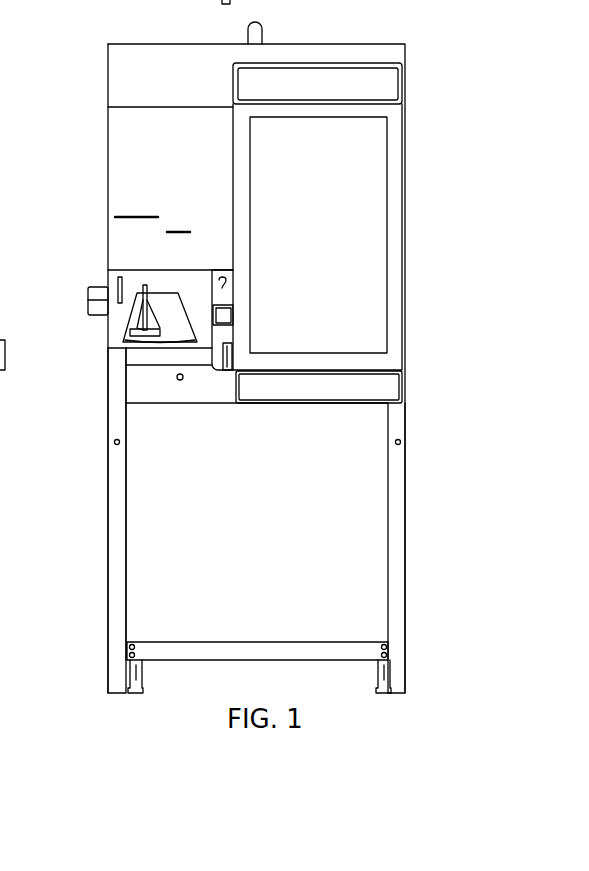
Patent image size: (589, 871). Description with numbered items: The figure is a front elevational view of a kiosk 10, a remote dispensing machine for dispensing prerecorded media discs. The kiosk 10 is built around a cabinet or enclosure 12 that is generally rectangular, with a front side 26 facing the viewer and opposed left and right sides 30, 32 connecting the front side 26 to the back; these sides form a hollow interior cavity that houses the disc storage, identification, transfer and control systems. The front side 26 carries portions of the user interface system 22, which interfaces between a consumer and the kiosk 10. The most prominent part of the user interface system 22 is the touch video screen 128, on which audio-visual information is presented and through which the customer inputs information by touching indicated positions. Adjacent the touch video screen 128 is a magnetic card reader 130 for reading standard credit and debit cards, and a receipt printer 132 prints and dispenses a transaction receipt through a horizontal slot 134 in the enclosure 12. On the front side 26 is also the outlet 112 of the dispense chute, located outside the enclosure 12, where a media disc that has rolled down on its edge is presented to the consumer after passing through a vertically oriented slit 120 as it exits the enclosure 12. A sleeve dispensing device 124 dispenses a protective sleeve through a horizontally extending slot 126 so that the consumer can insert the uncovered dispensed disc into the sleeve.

The kiosk 10 is at (65, 75).
The enclosure 12 is at (110, 572).
The user interface system 22 is at (410, 189).
The front side 26 is at (166, 494).
The left side 30 is at (407, 418).
The right side 32 is at (107, 414).
The outlet 112 is at (132, 322).
The vertically oriented slit 120 is at (135, 311).
The sleeve dispensing device 124 is at (135, 203).
The horizontally extending slot 126 is at (142, 221).
The touch video screen 128 is at (352, 278).
The magnetic card reader 130 is at (228, 373).
The receipt printer 132 is at (189, 218).
The horizontal slot 134 is at (183, 234).